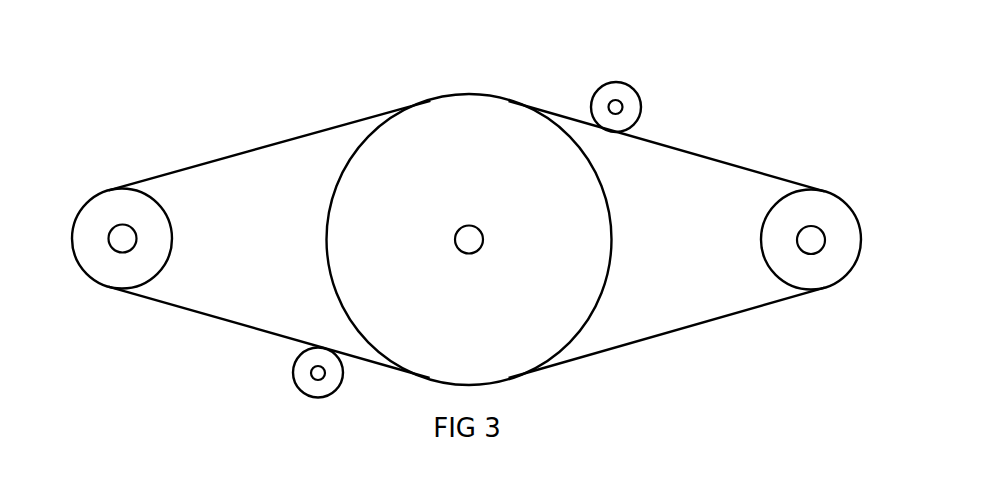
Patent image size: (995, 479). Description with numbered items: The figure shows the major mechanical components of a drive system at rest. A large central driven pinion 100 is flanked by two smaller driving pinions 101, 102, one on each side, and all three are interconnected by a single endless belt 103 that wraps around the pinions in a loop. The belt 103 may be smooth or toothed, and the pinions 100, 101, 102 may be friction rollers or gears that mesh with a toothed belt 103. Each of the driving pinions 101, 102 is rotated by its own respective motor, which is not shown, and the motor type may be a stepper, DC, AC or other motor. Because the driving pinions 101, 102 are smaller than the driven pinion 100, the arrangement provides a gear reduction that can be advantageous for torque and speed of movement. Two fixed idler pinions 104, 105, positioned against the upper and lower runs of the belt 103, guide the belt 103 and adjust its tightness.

The driven pinion 100 is at (413, 128).
The driving pinion 101 is at (829, 212).
The driving pinion 102 is at (92, 216).
The endless belt 103 is at (670, 340).
The idler pinion 104 is at (623, 95).
The idler pinion 105 is at (305, 383).